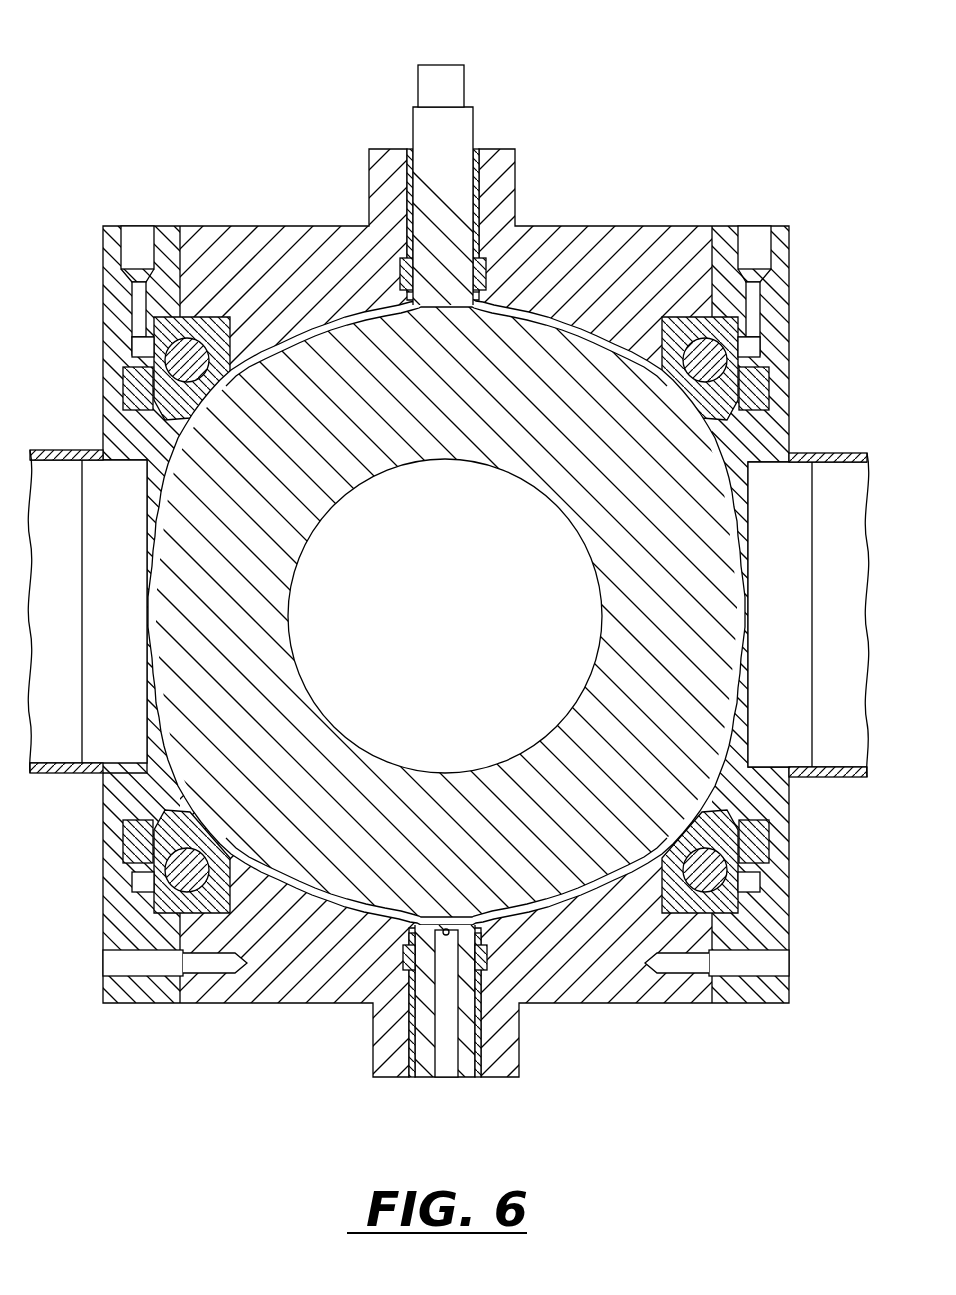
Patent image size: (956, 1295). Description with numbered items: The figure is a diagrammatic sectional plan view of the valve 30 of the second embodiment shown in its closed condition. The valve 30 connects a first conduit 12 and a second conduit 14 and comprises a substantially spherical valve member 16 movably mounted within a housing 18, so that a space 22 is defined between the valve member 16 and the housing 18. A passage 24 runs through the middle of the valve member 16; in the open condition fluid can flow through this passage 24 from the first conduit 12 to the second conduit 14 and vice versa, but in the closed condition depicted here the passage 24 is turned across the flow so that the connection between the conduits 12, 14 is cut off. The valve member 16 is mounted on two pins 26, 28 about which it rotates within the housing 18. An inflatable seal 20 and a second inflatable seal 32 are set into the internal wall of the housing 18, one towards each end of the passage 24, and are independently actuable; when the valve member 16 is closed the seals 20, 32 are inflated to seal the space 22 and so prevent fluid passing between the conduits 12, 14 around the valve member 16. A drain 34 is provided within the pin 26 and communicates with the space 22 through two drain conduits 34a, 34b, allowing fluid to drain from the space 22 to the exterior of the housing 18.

The first conduit 12 is at (48, 755).
The second conduit 14 is at (830, 750).
The valve member 16 is at (352, 340).
The housing 18 is at (265, 1005).
The inflatable seal 20 is at (717, 433).
The space 22 is at (158, 440).
The passage 24 is at (445, 616).
The pin 26 is at (452, 1037).
The pin 28 is at (428, 128).
The valve 30 is at (478, 583).
The second inflatable seal 32 is at (133, 852).
The drain 34 is at (447, 1075).
The drain conduit 34a is at (446, 936).
The drain conduit 34b is at (478, 925).